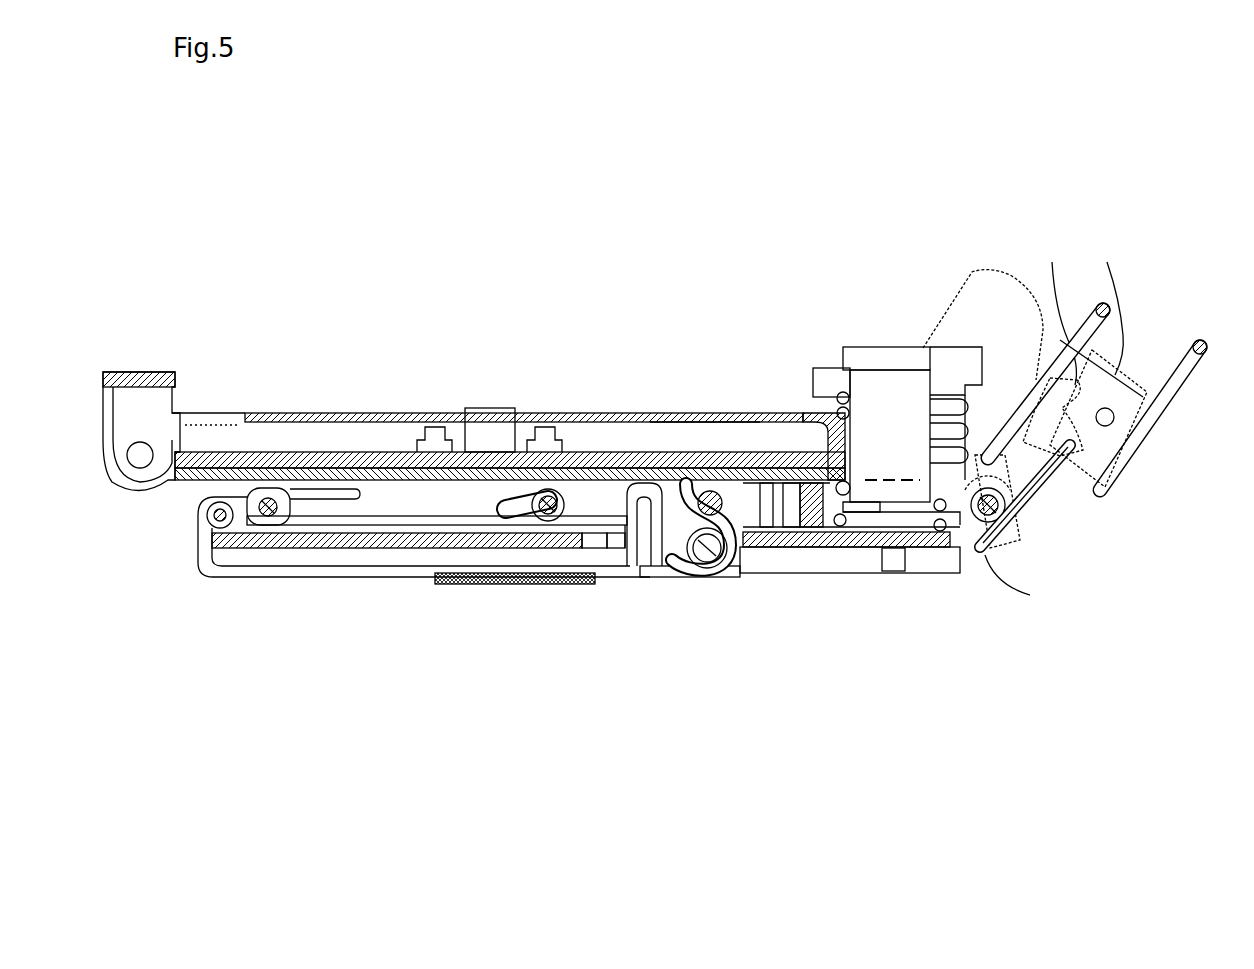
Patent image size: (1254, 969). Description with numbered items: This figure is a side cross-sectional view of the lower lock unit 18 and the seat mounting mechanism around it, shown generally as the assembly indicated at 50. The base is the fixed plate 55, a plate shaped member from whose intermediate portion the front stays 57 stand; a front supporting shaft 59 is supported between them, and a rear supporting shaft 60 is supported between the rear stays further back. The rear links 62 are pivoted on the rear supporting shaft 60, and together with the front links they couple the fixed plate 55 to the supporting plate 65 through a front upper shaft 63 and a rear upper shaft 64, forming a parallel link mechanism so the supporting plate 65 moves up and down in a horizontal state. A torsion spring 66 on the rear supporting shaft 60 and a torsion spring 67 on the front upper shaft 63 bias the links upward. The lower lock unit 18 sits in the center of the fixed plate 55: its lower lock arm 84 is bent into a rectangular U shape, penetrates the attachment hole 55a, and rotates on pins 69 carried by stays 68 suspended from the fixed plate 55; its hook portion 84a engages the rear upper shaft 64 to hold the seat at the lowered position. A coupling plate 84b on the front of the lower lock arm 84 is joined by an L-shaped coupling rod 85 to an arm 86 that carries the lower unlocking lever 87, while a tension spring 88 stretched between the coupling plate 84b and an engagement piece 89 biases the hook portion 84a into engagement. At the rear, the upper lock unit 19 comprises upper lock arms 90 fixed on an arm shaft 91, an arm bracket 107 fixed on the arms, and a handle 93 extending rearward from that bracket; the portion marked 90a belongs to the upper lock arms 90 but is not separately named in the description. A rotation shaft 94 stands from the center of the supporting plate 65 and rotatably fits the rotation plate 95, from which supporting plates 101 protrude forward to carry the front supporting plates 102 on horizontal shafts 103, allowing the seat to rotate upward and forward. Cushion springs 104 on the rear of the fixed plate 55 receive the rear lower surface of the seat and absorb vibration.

The lower lock unit 18 is at (575, 630).
The upper lock unit 19 is at (1065, 400).
The upper slide assembly 50 is at (510, 327).
The fixed plate 55 is at (958, 548).
The attachment hole 55a is at (757, 570).
The front stays 57 is at (618, 415).
The front supporting shaft 59 is at (600, 480).
The rear supporting shaft 60 is at (1010, 540).
The rear links 62 is at (817, 570).
The front upper shaft 63 is at (272, 493).
The rear upper shaft 64 is at (675, 415).
The supporting plate 65 is at (405, 418).
The torsion spring 66 is at (990, 548).
The torsion spring 67 is at (350, 440).
The stays 68 is at (865, 573).
The pins 69 is at (713, 580).
The lower lock arm 84 is at (678, 585).
The hook portion 84a is at (742, 415).
The coupling plate 84b is at (662, 590).
The coupling rod 85 is at (305, 558).
The arm 86 is at (203, 590).
The lower unlocking lever 87 is at (200, 530).
The spring 88 is at (483, 592).
The engagement piece 89 is at (375, 556).
The upper lock arms 90 is at (1080, 375).
The lever hook 90a is at (1062, 378).
The arm shaft 91 is at (1128, 465).
The handle 93 is at (1187, 345).
The rotation shaft 94 is at (505, 410).
The rotation plate 95 is at (635, 415).
The supporting plates 101 is at (218, 425).
The front supporting plates 102 is at (150, 370).
The shafts 103 is at (138, 470).
The cushion springs 104 is at (852, 365).
The arm bracket 107 is at (1130, 372).